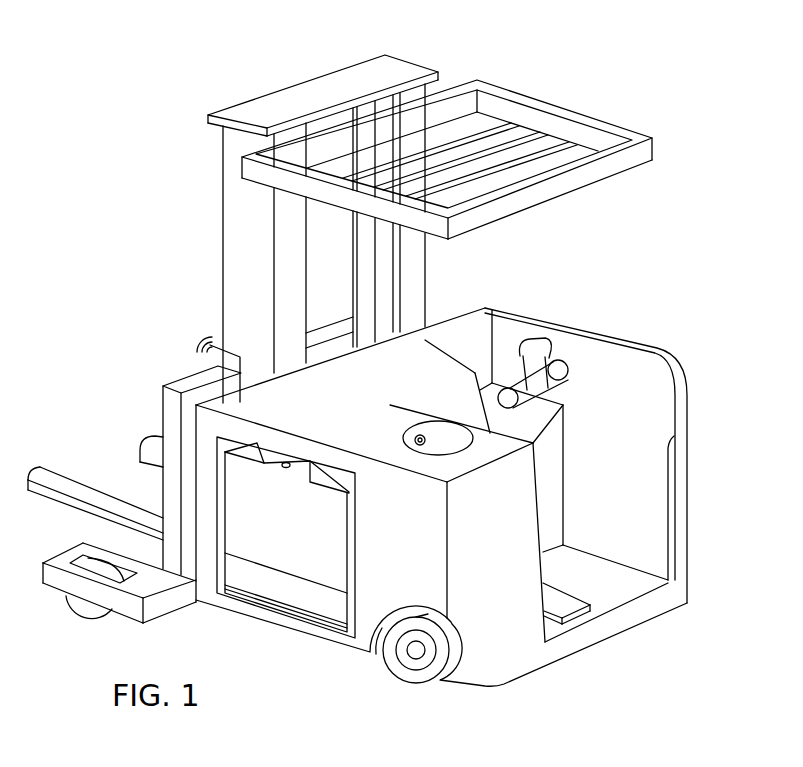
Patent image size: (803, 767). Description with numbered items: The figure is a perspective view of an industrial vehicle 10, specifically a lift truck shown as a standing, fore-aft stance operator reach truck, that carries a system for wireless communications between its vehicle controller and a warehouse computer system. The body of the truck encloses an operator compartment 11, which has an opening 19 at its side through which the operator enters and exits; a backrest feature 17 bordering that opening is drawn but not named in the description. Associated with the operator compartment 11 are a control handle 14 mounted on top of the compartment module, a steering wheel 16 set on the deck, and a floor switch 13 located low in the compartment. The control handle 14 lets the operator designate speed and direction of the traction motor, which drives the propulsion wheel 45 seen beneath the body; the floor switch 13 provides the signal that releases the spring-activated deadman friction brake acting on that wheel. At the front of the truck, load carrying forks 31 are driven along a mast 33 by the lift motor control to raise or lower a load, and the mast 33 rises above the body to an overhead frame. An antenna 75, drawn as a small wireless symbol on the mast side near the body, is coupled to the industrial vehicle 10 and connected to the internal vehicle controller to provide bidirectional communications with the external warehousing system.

The industrial vehicle 10 is at (593, 83).
The operator compartment 11 is at (594, 479).
The floor switch 13 is at (587, 616).
The control handle 14 is at (552, 340).
The steering wheel 16 is at (420, 429).
The backrest 17 is at (688, 495).
The opening 19 is at (700, 508).
The load carrying forks 31 is at (150, 443).
The mast 33 is at (407, 63).
The propulsion wheel 45 is at (390, 673).
The antenna 75 is at (193, 343).